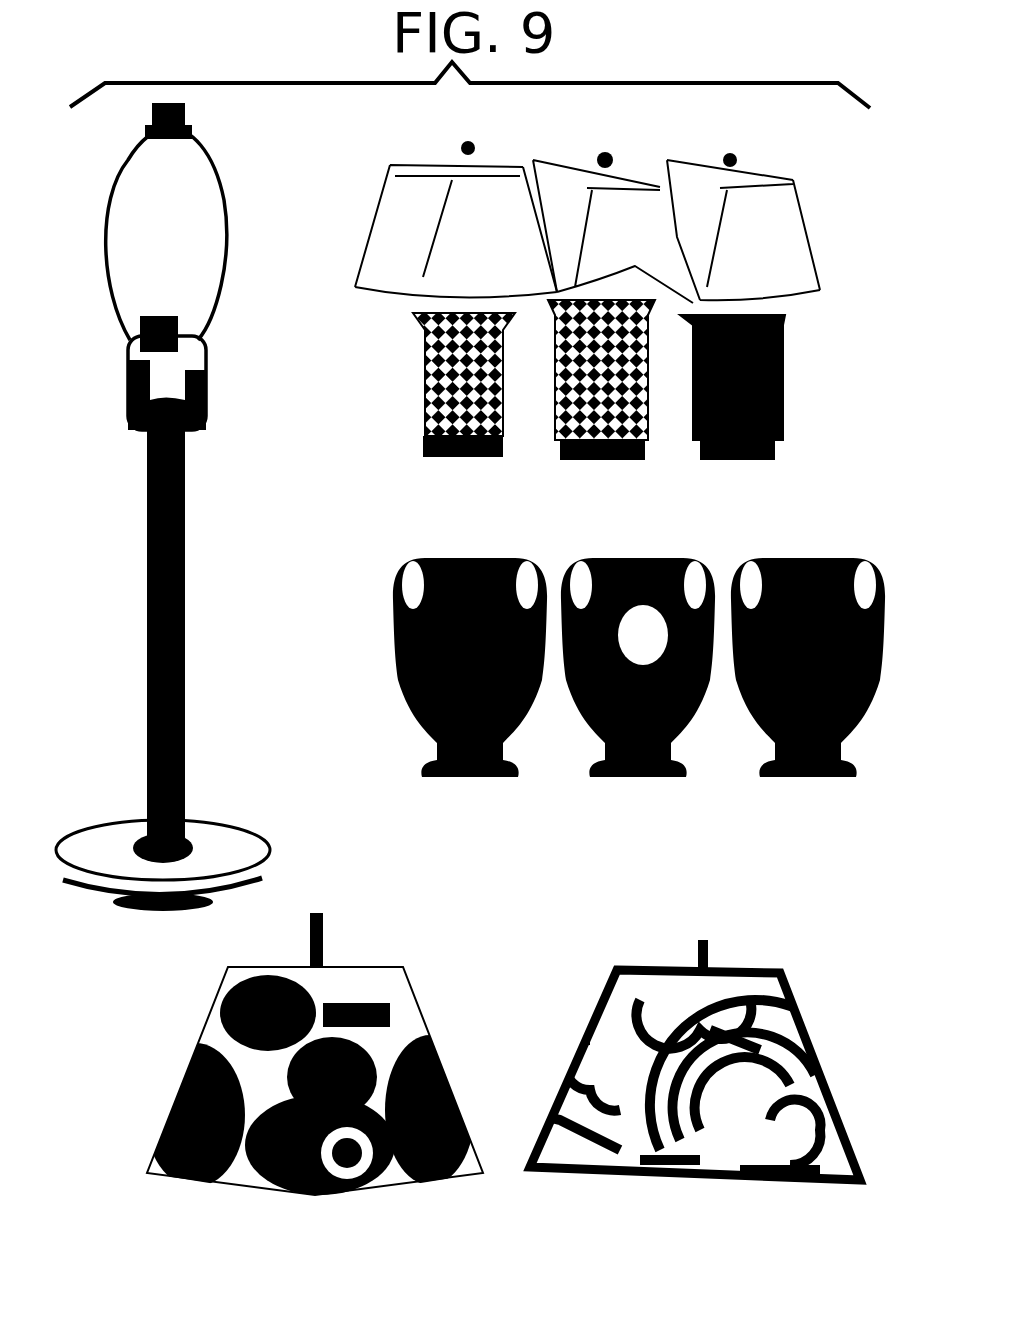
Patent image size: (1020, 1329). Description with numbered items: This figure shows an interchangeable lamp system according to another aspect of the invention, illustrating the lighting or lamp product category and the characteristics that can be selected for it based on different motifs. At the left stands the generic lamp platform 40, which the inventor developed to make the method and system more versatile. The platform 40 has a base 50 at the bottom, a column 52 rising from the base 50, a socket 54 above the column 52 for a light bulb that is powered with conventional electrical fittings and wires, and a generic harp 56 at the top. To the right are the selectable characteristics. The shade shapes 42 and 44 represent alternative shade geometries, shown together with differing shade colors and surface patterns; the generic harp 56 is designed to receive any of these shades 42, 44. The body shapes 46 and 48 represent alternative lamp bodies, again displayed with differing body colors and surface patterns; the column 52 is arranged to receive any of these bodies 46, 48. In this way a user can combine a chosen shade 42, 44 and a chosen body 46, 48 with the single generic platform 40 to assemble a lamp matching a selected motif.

The generic lamp platform 40 is at (175, 507).
The shade shape 42 is at (590, 1043).
The shade shape 44 is at (645, 240).
The body shape 46 is at (768, 423).
The body shape 48 is at (777, 558).
The base 50 is at (130, 837).
The column 52 is at (185, 585).
The socket 54 is at (157, 347).
The generic harp 56 is at (223, 260).